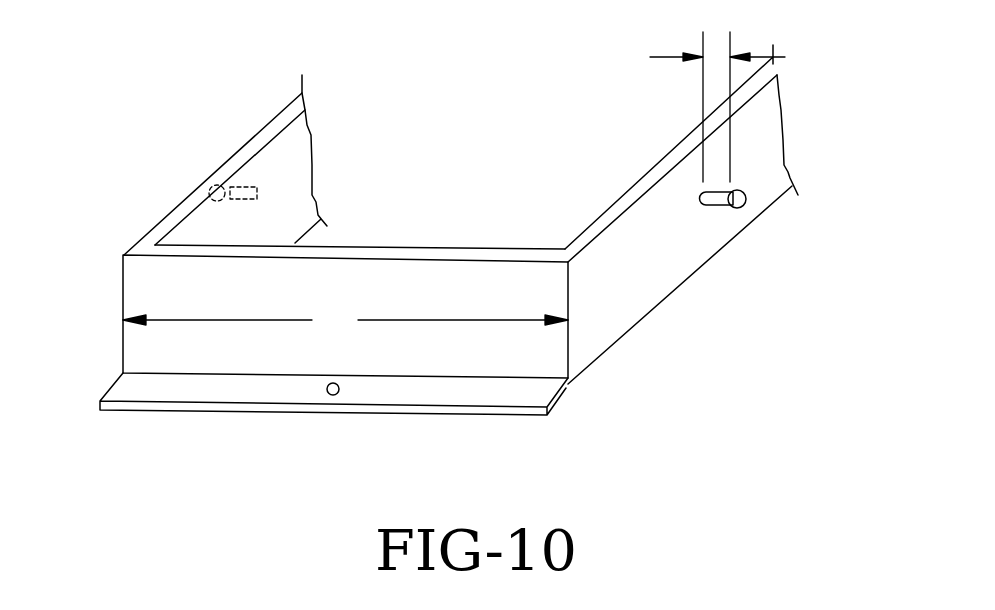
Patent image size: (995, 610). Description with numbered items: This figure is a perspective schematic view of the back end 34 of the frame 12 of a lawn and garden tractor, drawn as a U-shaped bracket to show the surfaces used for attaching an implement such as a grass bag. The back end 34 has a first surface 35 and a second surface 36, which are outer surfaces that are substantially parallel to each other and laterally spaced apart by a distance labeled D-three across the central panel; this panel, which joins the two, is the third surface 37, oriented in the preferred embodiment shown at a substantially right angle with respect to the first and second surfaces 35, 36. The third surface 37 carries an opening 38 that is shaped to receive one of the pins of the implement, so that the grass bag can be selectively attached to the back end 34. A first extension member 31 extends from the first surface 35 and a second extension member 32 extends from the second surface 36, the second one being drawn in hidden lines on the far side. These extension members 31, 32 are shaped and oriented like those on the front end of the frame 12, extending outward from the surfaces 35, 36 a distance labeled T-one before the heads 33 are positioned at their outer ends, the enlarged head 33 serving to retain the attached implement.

The frame 12 is at (468, 259).
The first extension member 31 is at (710, 205).
The second extension member 32 is at (209, 195).
The head 33 is at (745, 203).
The back end 34 is at (537, 352).
The first surface 35 is at (762, 183).
The second surface 36 is at (263, 148).
The third surface 37 is at (184, 389).
The opening 38 is at (326, 392).